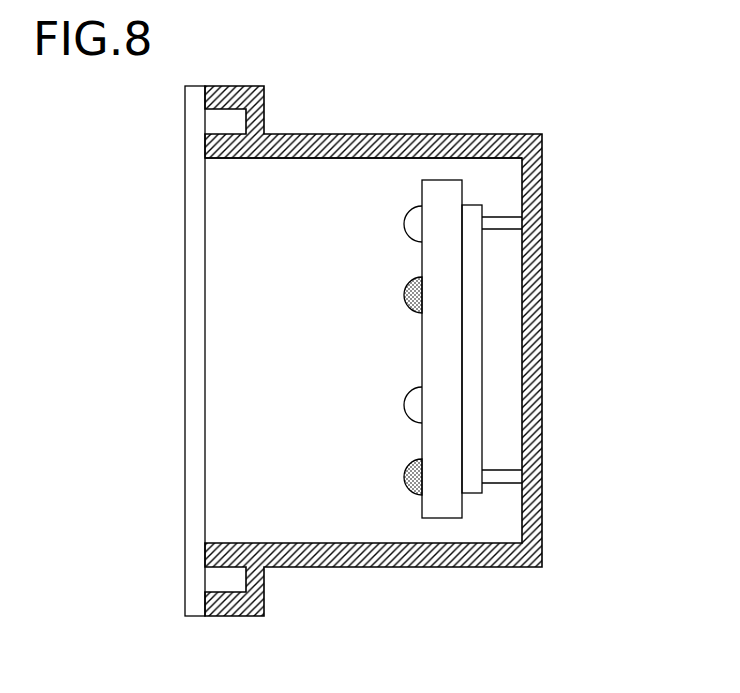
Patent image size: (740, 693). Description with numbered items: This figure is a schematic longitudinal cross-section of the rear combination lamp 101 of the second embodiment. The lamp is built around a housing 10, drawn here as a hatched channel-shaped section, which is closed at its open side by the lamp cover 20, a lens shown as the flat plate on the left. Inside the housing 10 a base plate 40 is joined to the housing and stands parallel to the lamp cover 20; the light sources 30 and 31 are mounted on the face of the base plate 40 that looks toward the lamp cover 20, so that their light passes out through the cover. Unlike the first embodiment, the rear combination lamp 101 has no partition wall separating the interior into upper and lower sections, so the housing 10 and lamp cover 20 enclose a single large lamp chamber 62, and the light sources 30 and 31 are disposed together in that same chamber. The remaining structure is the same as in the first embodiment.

The lamp cover 20 is at (184, 255).
The housing 10 is at (542, 205).
The lamp chamber 62 is at (383, 175).
The base plate 40 is at (440, 362).
The light source 30 is at (405, 217).
The light source 31 is at (405, 291).
The rear combination lamp 101 is at (607, 541).